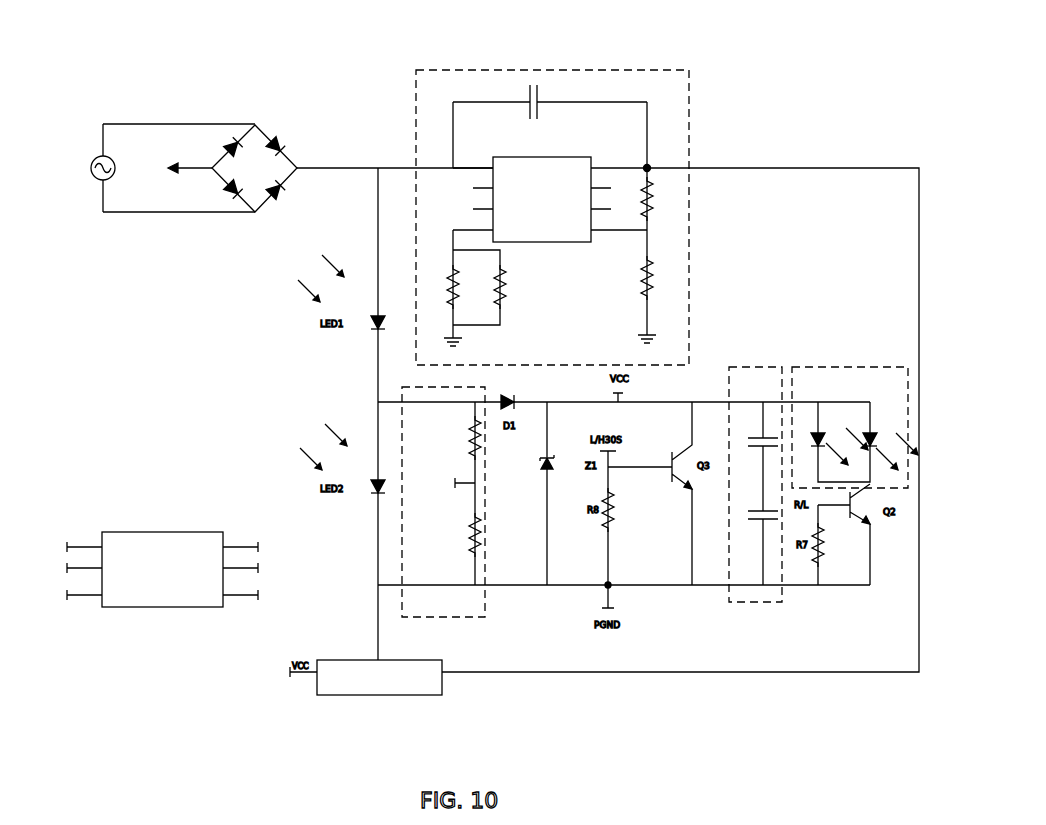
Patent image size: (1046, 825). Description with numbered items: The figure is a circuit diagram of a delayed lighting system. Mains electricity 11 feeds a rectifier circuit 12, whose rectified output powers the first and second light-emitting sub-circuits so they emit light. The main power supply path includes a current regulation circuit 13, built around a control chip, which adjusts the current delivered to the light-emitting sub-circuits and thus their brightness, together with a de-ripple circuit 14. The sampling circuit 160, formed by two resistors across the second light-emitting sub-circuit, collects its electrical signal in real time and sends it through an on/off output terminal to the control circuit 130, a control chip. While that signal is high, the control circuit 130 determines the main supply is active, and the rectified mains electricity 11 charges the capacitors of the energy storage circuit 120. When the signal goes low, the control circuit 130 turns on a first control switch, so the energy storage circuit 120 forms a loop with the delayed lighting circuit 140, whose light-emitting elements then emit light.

The mains electricity 11 is at (72, 216).
The rectifier circuit 12 is at (282, 128).
The current regulation circuit 13 is at (689, 138).
The de-ripple circuit 14 is at (372, 695).
The energy storage circuit 120 is at (756, 370).
The control circuit 130 is at (162, 513).
The delayed lighting circuit 140 is at (857, 370).
The sampling circuit 160 is at (485, 617).